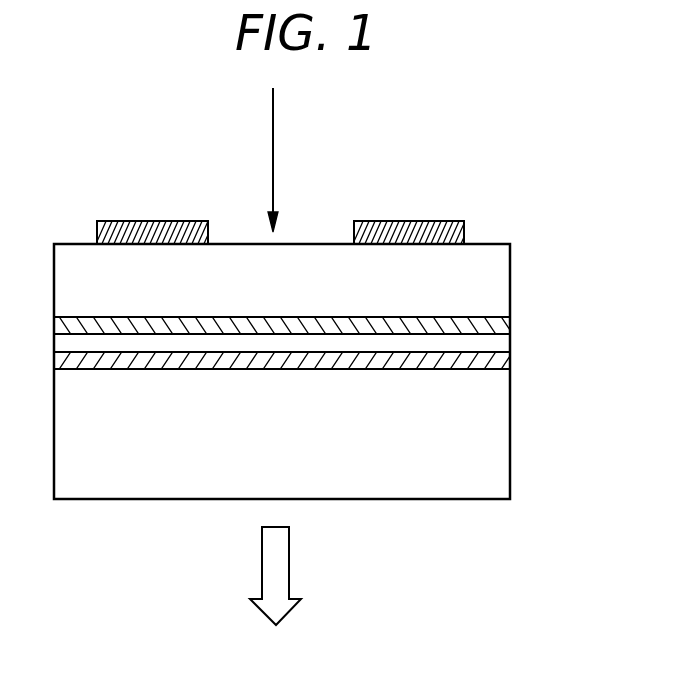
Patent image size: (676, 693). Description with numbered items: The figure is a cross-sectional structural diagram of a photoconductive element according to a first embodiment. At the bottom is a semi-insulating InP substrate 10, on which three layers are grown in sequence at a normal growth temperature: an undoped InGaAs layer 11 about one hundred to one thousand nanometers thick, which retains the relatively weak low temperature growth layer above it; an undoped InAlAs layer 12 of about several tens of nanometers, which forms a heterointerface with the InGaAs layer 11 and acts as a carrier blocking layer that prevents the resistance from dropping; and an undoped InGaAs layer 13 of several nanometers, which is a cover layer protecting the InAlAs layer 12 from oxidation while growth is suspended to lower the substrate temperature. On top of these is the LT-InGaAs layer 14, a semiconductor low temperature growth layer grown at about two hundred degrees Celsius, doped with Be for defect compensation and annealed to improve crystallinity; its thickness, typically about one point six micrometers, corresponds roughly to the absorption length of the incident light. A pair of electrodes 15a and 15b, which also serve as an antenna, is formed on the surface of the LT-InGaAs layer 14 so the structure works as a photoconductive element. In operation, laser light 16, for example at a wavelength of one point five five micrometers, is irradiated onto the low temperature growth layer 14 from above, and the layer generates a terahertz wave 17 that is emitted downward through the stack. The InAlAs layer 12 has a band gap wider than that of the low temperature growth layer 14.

The semi-insulating InP substrate 10 is at (497, 452).
The InGaAs layer 11 is at (500, 358).
The InAlAs layer 12 is at (500, 342).
The InGaAs layer 13 is at (473, 322).
The LT-InGaAs layer 14 is at (490, 248).
The electrode 15a is at (423, 228).
The electrode 15b is at (145, 233).
The laser light 16 is at (274, 126).
The terahertz wave 17 is at (289, 573).